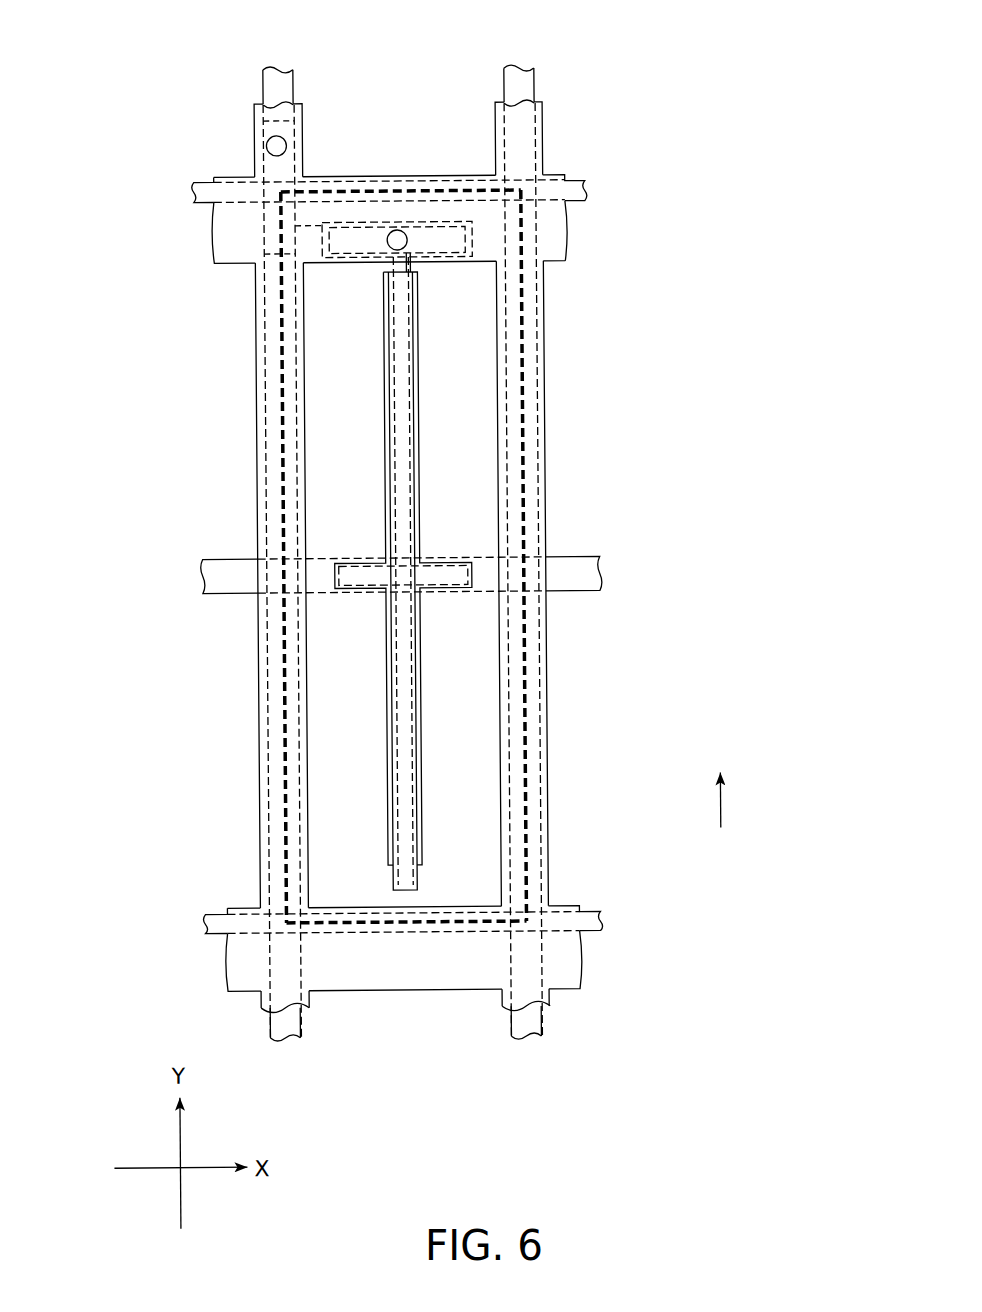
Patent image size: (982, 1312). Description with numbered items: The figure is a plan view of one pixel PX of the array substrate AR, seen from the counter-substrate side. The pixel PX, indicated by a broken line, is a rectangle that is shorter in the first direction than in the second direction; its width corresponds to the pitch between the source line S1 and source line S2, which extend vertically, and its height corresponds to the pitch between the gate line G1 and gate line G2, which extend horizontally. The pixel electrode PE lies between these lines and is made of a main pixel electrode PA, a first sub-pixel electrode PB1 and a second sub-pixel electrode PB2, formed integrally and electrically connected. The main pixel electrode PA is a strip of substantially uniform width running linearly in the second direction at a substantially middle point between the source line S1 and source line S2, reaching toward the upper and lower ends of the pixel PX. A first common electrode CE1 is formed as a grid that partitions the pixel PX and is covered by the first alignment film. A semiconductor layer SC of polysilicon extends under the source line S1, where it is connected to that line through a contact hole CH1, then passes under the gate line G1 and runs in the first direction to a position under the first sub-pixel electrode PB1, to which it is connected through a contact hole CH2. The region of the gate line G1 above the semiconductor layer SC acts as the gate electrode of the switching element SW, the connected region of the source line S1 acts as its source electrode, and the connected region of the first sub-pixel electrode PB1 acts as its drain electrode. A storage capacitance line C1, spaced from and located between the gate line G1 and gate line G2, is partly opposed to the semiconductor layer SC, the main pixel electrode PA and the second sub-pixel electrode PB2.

The source line S1 is at (275, 64).
The source line S2 is at (517, 64).
The semiconductor layer SC is at (277, 120).
The first common electrode CE1 is at (306, 117).
The contact hole CH1 is at (270, 145).
The contact hole CH2 is at (391, 245).
The gate line G1 is at (197, 185).
The gate line G2 is at (203, 915).
The switching element SW is at (238, 212).
The array substrate AR is at (596, 108).
The first sub-pixel electrode PB1 is at (445, 266).
The second sub-pixel electrode PB2 is at (365, 590).
The main pixel electrode PA is at (418, 486).
The pixel electrode PE is at (426, 862).
The storage capacitance line C1 is at (203, 577).
The pixel PX is at (533, 927).